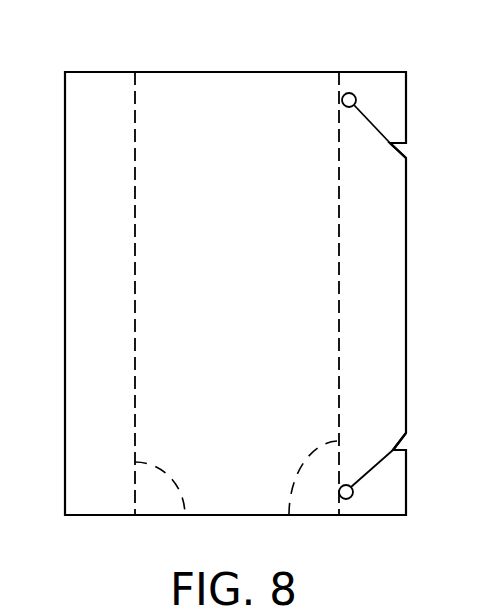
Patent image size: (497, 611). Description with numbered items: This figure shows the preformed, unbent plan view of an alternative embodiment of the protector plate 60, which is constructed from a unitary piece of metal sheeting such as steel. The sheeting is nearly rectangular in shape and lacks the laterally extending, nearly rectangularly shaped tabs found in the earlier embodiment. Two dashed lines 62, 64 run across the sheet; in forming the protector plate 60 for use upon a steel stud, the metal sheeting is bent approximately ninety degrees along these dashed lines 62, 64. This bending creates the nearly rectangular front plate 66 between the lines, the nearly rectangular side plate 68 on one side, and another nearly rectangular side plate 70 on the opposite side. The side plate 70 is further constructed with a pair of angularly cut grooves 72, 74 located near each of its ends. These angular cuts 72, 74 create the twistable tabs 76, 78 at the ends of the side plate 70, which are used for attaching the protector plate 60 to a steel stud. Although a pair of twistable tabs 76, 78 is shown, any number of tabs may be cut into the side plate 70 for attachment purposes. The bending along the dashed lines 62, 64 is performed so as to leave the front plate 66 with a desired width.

The protector plate 60 is at (218, 60).
The dashed line 62 is at (185, 527).
The dashed line 64 is at (297, 532).
The front plate 66 is at (176, 250).
The side plate 68 is at (97, 374).
The side plate 70 is at (372, 283).
The angularly cut groove 72 is at (372, 458).
The angularly cut groove 74 is at (373, 132).
The twistable tab 76 is at (383, 485).
The twistable tab 78 is at (385, 98).